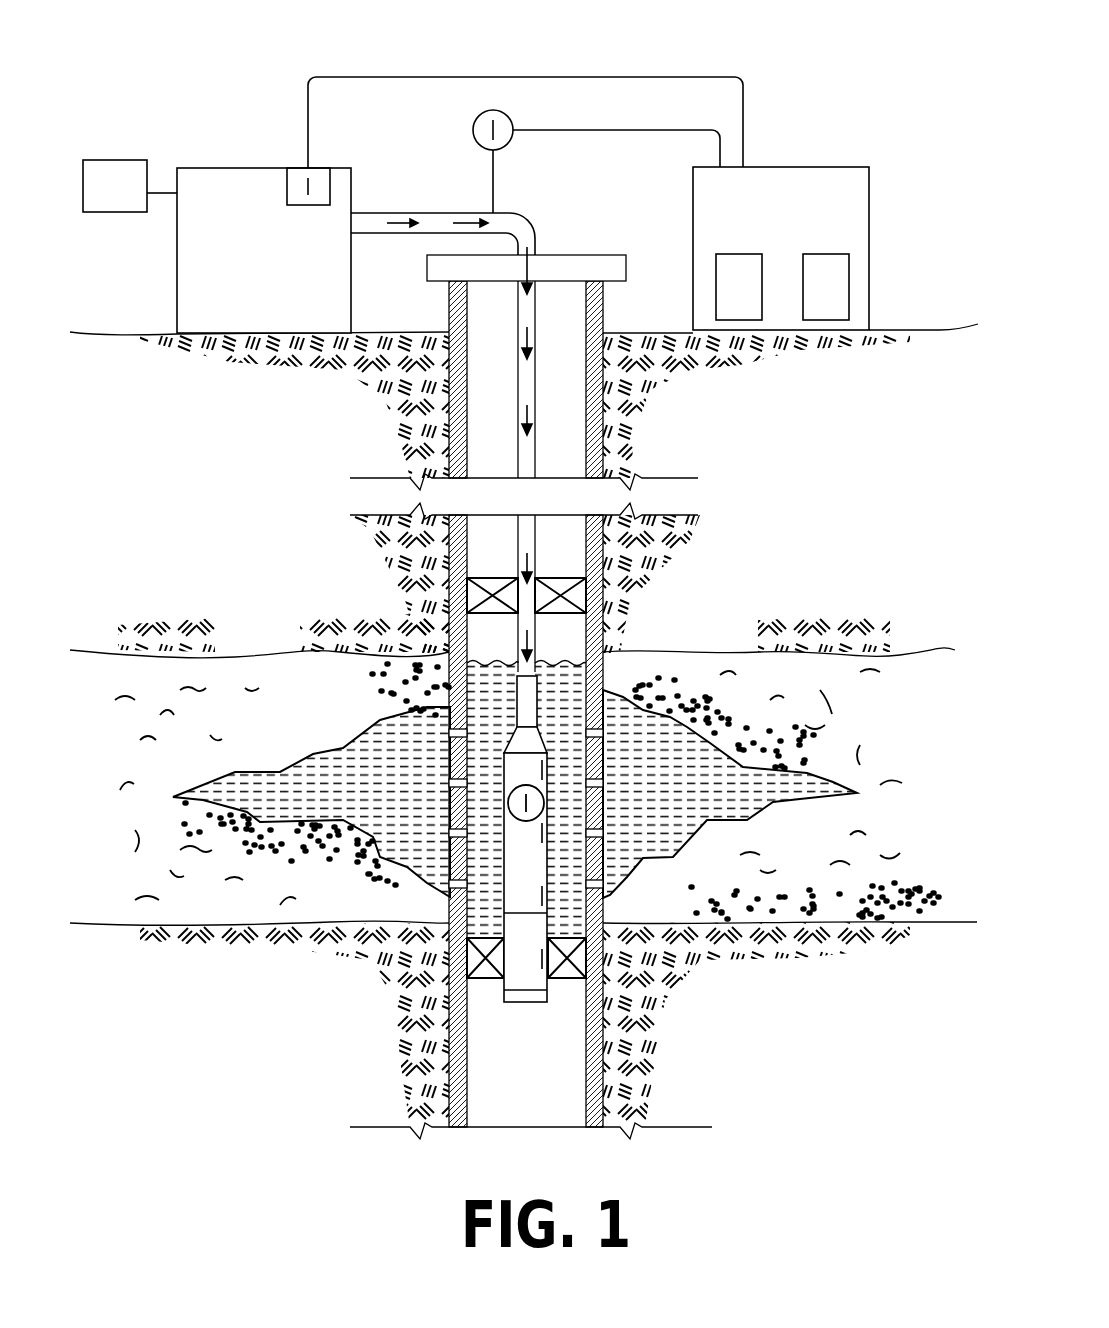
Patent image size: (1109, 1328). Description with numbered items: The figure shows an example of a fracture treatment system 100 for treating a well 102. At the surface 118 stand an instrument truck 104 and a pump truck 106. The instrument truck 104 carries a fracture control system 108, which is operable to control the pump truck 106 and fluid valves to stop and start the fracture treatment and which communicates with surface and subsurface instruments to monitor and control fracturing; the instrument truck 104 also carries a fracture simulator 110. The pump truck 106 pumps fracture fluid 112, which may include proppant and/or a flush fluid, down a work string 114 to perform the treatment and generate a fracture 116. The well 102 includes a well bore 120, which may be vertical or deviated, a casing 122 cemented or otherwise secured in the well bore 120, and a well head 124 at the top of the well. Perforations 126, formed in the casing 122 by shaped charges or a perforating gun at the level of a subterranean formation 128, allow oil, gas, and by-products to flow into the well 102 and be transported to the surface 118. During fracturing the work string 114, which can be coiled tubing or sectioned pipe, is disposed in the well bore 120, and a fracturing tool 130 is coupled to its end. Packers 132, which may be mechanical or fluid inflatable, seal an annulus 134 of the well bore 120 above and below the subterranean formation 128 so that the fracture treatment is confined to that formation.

The fracture treatment system 100 is at (772, 73).
The well 102 is at (566, 207).
The instrument truck 104 is at (801, 222).
The pump truck 106 is at (222, 167).
The fracture control system 108 is at (720, 301).
The fracture simulator 110 is at (807, 301).
The fracture fluid 112 is at (398, 221).
The work string 114 is at (537, 543).
The fracture 116 is at (280, 772).
The surface 118 is at (660, 325).
The well bore 120 is at (585, 375).
The casing 122 is at (467, 417).
The well head 124 is at (611, 254).
The perforations 126 is at (449, 736).
The subterranean formation 128 is at (864, 727).
The fracturing tool 130 is at (513, 1017).
The packers 132 is at (560, 618).
The annulus 134 is at (541, 441).